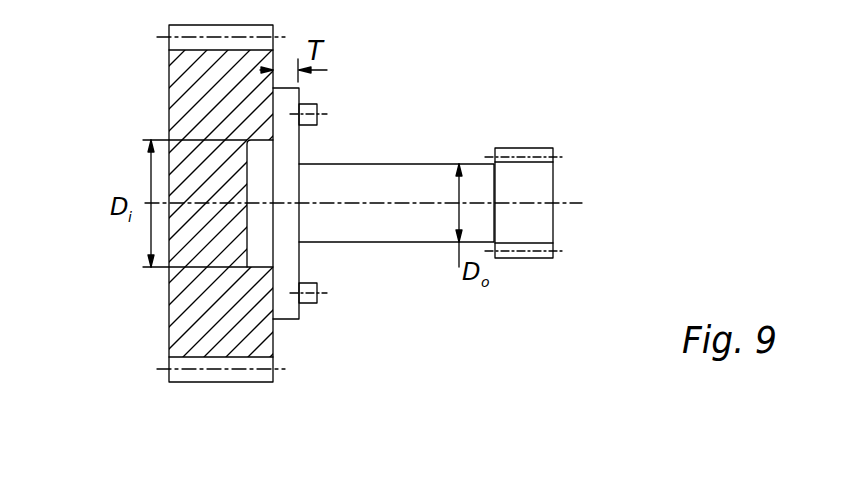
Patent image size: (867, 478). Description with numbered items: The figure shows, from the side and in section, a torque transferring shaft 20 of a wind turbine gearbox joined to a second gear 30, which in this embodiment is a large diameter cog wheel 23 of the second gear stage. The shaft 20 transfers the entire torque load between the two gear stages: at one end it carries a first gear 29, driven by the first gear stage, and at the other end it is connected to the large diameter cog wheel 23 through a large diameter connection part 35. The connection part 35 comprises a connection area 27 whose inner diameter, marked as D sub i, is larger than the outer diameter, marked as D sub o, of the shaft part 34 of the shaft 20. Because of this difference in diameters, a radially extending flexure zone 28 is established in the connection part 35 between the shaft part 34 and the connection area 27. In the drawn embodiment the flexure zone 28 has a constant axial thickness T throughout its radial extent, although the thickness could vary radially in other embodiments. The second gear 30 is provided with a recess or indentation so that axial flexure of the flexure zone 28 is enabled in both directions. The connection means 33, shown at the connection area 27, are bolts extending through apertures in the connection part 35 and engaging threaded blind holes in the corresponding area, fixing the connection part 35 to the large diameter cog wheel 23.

The torque transferring shaft 20 is at (393, 260).
The large diameter cog wheel 23 is at (190, 330).
The connection area 27 is at (275, 110).
The flexure zone 28 is at (264, 192).
The first gear 29 is at (525, 170).
The second gear 30 is at (288, 203).
The connection means 33 is at (312, 304).
The shaft part 34 is at (440, 164).
The connection part 35 is at (264, 192).